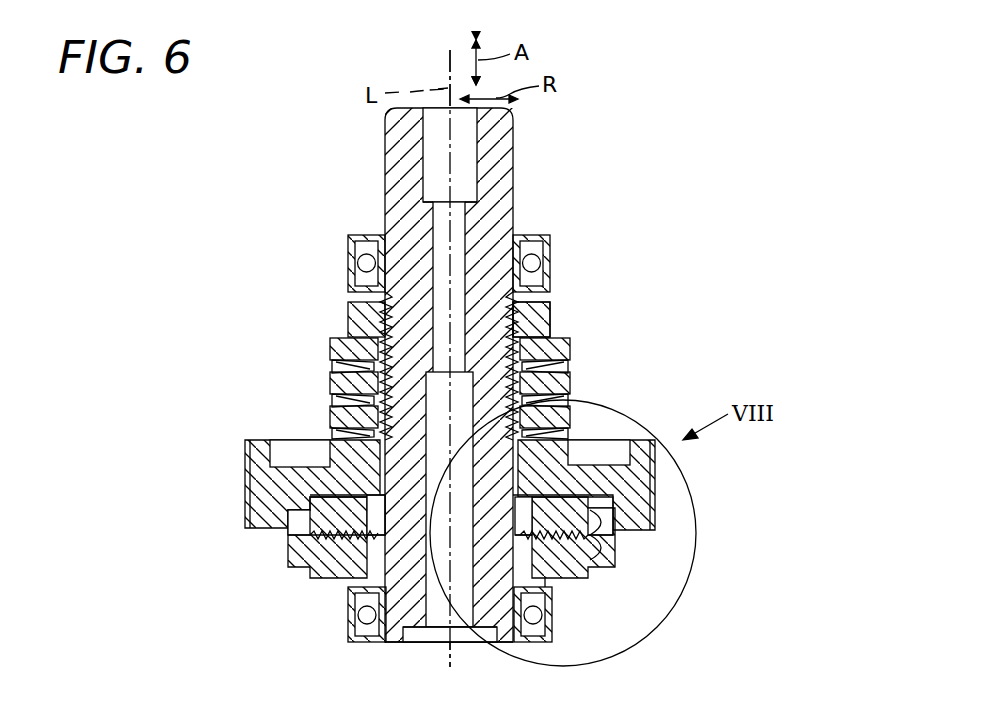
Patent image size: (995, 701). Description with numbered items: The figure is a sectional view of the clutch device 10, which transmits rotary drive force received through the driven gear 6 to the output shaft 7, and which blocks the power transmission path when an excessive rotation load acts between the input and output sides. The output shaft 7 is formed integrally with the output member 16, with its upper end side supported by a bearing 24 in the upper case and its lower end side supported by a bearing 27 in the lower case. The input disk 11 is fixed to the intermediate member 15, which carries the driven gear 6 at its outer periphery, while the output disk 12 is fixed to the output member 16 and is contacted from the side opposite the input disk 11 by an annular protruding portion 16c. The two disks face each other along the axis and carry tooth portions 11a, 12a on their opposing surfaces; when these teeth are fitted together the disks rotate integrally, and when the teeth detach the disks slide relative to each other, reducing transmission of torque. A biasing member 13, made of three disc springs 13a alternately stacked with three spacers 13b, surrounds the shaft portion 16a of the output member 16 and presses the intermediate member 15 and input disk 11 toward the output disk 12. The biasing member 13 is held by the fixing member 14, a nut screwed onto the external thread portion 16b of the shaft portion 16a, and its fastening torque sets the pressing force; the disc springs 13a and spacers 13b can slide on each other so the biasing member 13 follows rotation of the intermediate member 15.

The driven gear 6 is at (278, 451).
The output shaft 7 is at (497, 144).
The clutch device 10 is at (599, 184).
The input disk 11 is at (287, 535).
The output disk 12 is at (287, 553).
The biasing member 13 is at (465, 352).
The disc spring 13a is at (570, 366).
The spacer 13b is at (570, 349).
The fixing member 14 is at (348, 318).
The intermediate member 15 is at (300, 475).
The output member 16 is at (418, 600).
The shaft portion 16a is at (515, 480).
The external thread portion 16b is at (553, 312).
The annular protruding portion 16c is at (545, 582).
The bearing 24 is at (553, 257).
The bearing 27 is at (348, 617).
The tooth portion 11a is at (613, 558).
The tooth portion 12a is at (613, 516).